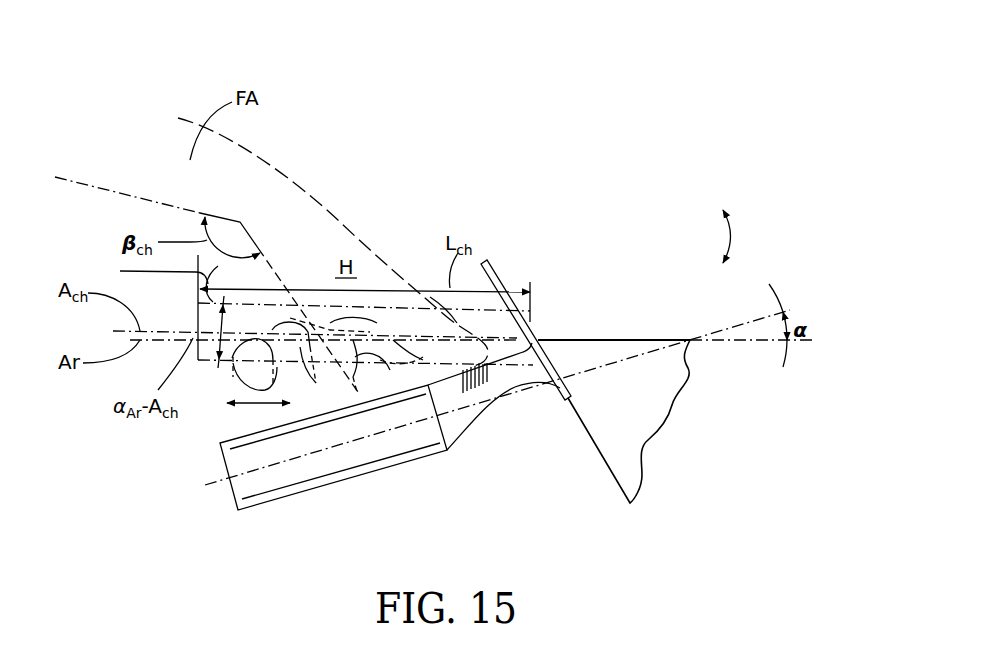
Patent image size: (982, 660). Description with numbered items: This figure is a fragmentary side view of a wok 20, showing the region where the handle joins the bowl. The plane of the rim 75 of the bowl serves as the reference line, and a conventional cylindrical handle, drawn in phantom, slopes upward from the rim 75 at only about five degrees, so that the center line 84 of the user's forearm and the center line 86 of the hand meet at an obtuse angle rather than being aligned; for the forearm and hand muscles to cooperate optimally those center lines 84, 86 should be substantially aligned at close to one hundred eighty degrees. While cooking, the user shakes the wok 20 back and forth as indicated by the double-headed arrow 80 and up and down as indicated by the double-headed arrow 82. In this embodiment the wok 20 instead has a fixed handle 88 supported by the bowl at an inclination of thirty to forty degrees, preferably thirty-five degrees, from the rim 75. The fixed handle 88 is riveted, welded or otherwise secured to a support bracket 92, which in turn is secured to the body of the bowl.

The wok 20 is at (593, 440).
The rim 75 is at (627, 338).
The double-headed arrow 80 is at (218, 404).
The double-headed arrow 82 is at (734, 237).
The center line 84 is at (150, 200).
The center line 86 is at (283, 280).
The fixed handle 88 is at (322, 488).
The support bracket 92 is at (563, 397).